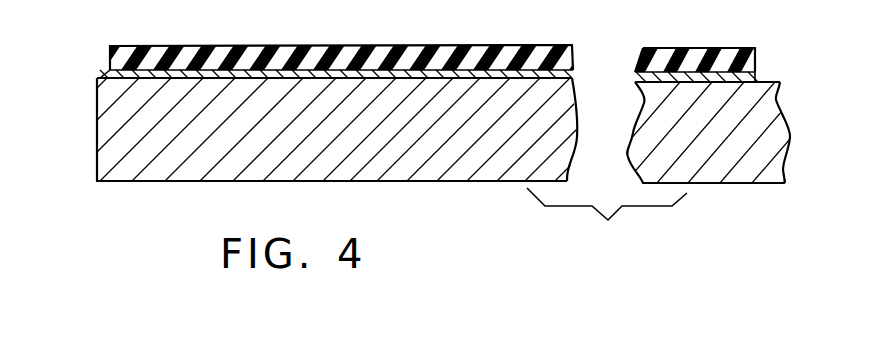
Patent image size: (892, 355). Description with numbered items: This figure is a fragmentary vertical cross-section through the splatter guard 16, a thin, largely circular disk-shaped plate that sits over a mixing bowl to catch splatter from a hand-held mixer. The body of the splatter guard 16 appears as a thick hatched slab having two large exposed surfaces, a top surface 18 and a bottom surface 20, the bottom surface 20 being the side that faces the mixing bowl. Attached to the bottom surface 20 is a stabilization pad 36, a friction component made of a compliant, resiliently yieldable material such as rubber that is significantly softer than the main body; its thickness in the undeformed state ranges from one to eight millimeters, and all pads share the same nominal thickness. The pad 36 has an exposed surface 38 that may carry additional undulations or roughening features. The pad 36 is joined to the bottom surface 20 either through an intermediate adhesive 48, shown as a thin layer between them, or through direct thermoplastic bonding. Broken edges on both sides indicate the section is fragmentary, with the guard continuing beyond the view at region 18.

The splatter guard 16 is at (110, 145).
The top surface 18 is at (743, 183).
The bottom surface 20 is at (102, 76).
The stabilization pad 36 is at (456, 34).
The exposed surface 38 is at (320, 45).
The intermediate adhesive 48 is at (244, 72).